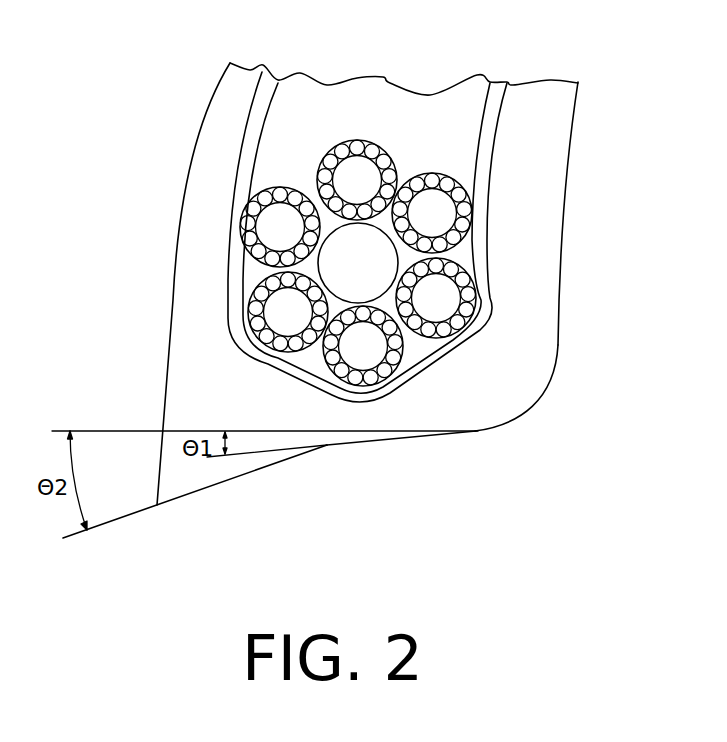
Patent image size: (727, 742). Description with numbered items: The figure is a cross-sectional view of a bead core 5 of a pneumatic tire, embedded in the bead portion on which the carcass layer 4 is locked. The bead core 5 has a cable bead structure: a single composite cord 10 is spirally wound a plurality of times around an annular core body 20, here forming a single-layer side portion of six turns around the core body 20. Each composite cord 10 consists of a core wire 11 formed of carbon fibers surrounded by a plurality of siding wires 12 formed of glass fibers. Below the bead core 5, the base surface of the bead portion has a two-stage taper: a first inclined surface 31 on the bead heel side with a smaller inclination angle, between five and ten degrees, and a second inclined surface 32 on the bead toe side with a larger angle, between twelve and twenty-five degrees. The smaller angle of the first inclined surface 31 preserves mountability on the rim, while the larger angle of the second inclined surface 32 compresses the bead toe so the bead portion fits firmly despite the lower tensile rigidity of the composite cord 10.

The carcass layer 4 is at (486, 140).
The bead core 5 is at (444, 172).
The composite cord 10 is at (512, 302).
The core wire 11 is at (437, 298).
The siding wire 12 is at (466, 322).
The core body 20 is at (340, 253).
The first inclined surface 31 is at (400, 440).
The second inclined surface 32 is at (232, 480).